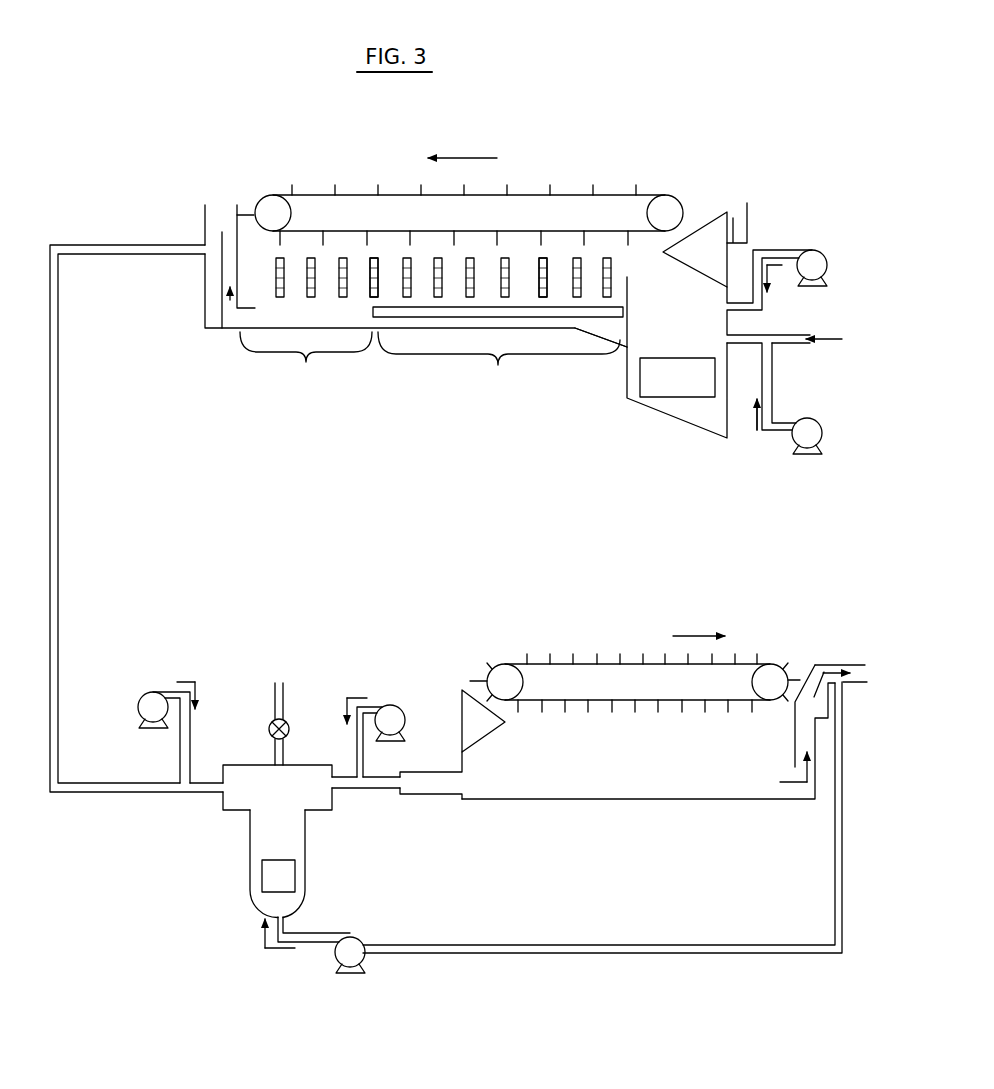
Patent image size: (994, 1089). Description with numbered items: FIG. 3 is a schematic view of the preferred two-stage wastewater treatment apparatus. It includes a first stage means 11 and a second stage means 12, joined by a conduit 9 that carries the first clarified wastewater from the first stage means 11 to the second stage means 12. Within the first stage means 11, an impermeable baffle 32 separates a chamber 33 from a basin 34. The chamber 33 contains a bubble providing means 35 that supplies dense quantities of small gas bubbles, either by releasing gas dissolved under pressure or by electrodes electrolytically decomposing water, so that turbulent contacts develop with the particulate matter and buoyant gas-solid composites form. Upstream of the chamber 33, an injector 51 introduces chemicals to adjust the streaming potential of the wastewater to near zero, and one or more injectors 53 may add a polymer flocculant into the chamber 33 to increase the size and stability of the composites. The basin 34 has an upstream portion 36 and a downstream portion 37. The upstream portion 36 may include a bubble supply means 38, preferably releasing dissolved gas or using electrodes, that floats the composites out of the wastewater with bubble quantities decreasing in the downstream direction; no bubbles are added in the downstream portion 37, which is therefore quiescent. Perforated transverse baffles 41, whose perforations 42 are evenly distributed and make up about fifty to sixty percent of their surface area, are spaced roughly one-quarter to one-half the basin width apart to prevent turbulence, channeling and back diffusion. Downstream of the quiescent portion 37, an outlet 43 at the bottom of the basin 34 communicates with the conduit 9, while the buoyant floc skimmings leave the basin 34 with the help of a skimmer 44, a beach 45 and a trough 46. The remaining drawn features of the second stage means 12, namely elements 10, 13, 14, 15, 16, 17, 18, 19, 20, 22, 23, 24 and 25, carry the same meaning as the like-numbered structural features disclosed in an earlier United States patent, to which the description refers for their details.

The conduit 9 is at (135, 793).
The pipe 10 is at (384, 789).
The first stage means 11 is at (455, 333).
The second stage means 12 is at (445, 801).
The pump 13 is at (155, 698).
The mixing vessel 14 is at (243, 765).
The filter housing 15 is at (250, 857).
The pump 16 is at (352, 937).
The supply line with valve 17 is at (273, 704).
The pump 18 is at (390, 714).
The collecting tank 19 is at (728, 800).
The filter element 20 is at (265, 881).
The conveyor belt 22 is at (538, 672).
The overflow outlet 23 is at (857, 668).
The spray nozzle 24 is at (478, 696).
The drain pipe 25 is at (750, 945).
The impermeable baffle 32 is at (627, 290).
The chamber 33 is at (656, 355).
The basin 34 is at (437, 289).
The bubble providing means 35 is at (677, 377).
The upstream portion 36 is at (499, 365).
The downstream portion 37 is at (306, 361).
The bubble supply means 38 is at (498, 318).
The perforated transverse baffles 41 is at (374, 258).
The perforations 42 is at (550, 274).
The outlet 43 is at (227, 265).
The skimmer 44 is at (612, 193).
The beach 45 is at (710, 242).
The trough 46 is at (734, 221).
The injector 51 is at (824, 437).
The injector 53 is at (830, 262).